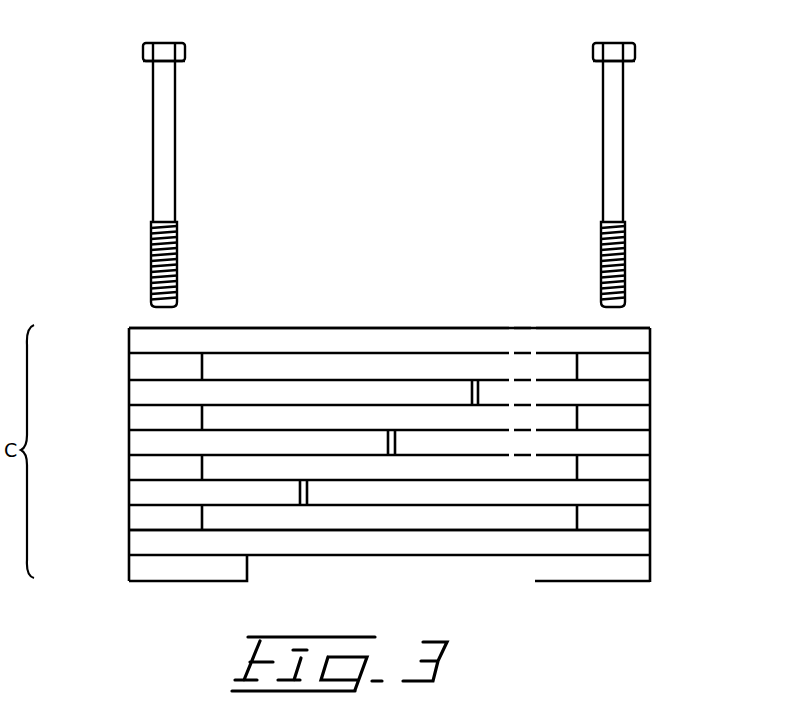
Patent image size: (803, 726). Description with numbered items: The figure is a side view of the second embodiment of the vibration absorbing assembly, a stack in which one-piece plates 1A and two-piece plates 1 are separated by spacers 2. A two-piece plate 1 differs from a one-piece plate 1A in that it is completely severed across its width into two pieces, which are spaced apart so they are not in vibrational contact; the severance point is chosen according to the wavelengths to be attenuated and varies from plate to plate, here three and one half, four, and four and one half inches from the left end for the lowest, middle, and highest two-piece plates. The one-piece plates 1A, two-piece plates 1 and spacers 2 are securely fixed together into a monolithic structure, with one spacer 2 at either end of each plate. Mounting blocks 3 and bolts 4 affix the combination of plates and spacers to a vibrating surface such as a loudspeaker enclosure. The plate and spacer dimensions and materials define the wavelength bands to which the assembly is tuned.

The two-piece plate 1 is at (395, 464).
The one-piece plate 1A is at (637, 342).
The spacer 2 is at (643, 368).
The mounting block 3 is at (182, 571).
The bolt 4 is at (175, 166).